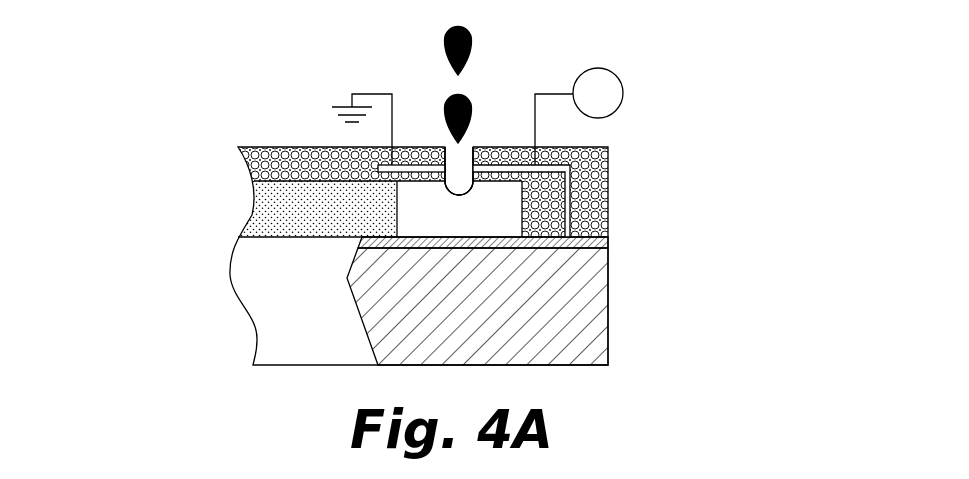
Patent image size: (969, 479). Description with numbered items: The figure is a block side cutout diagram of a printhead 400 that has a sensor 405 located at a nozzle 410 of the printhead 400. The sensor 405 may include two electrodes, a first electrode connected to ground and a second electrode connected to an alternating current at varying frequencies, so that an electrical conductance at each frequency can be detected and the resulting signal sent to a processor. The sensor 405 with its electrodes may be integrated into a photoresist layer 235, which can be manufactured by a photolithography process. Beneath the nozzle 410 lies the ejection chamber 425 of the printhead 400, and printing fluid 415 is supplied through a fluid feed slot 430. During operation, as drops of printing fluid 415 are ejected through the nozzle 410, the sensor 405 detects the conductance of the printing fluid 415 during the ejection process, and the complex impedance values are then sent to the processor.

The printhead 400 is at (227, 102).
The sensor 405 is at (378, 167).
The nozzle 410 is at (477, 135).
The printing fluid 415 is at (450, 105).
The ejection chamber 425 is at (432, 220).
The fluid feed slot 430 is at (310, 297).
The SU-8 layer 235 is at (592, 225).